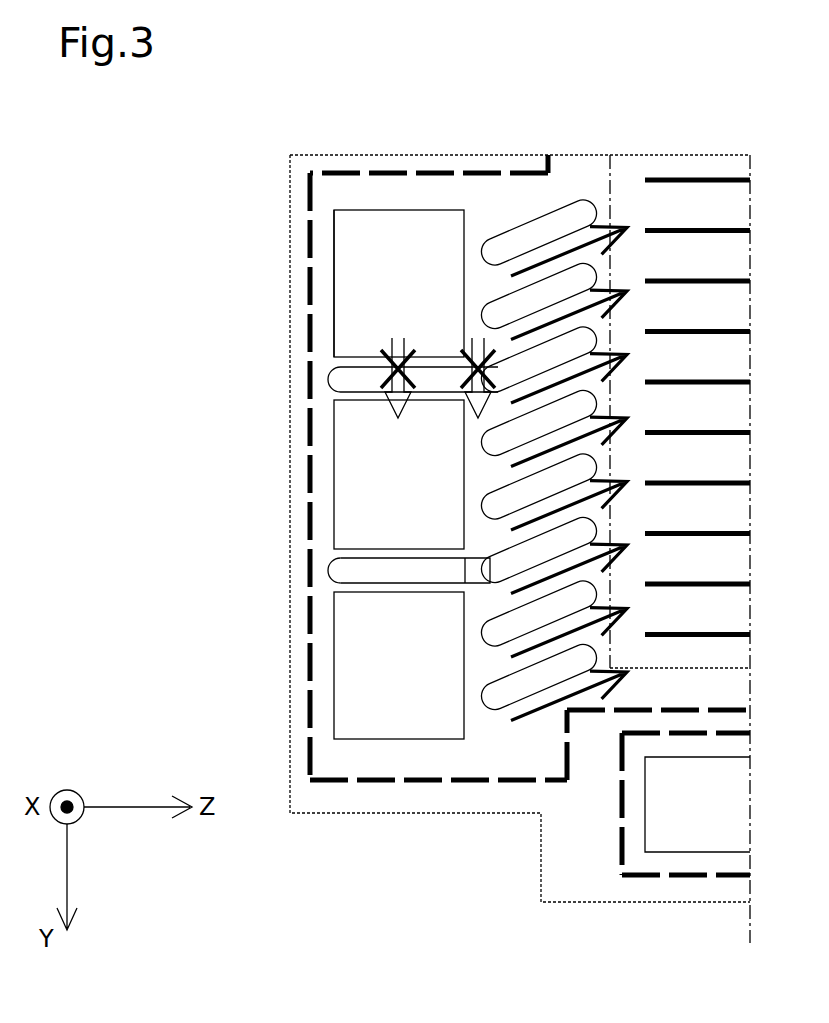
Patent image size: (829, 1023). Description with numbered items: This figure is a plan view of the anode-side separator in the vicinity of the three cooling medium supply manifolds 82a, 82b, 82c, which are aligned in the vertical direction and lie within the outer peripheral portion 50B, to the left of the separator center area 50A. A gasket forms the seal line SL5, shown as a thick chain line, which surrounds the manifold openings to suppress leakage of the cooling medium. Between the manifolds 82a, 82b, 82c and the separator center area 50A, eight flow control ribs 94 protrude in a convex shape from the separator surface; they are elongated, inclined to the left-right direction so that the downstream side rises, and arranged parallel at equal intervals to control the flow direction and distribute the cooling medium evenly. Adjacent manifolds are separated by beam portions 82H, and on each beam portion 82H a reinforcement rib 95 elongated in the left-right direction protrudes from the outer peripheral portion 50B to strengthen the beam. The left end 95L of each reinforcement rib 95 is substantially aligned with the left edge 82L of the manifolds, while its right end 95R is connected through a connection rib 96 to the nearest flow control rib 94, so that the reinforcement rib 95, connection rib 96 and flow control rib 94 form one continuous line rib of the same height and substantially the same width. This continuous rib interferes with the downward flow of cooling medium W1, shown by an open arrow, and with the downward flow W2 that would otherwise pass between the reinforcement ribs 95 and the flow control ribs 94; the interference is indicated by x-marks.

The separator center area 50A is at (608, 188).
The outer peripheral portion 50B is at (290, 189).
The seal line SL5 is at (403, 783).
The cooling medium supply manifold 82a is at (350, 331).
The cooling medium supply manifold 82b is at (350, 412).
The cooling medium supply manifold 82c is at (350, 635).
The left edge 82L is at (335, 243).
The beam portion 82H is at (430, 360).
The flow of cooling medium W1 is at (396, 340).
The flow of cooling medium W2 is at (470, 350).
The flow control rib 94 is at (540, 222).
The reinforcement rib 95 is at (397, 567).
The left end 95L is at (328, 570).
The right end 95R is at (442, 562).
The connection rib 96 is at (482, 558).